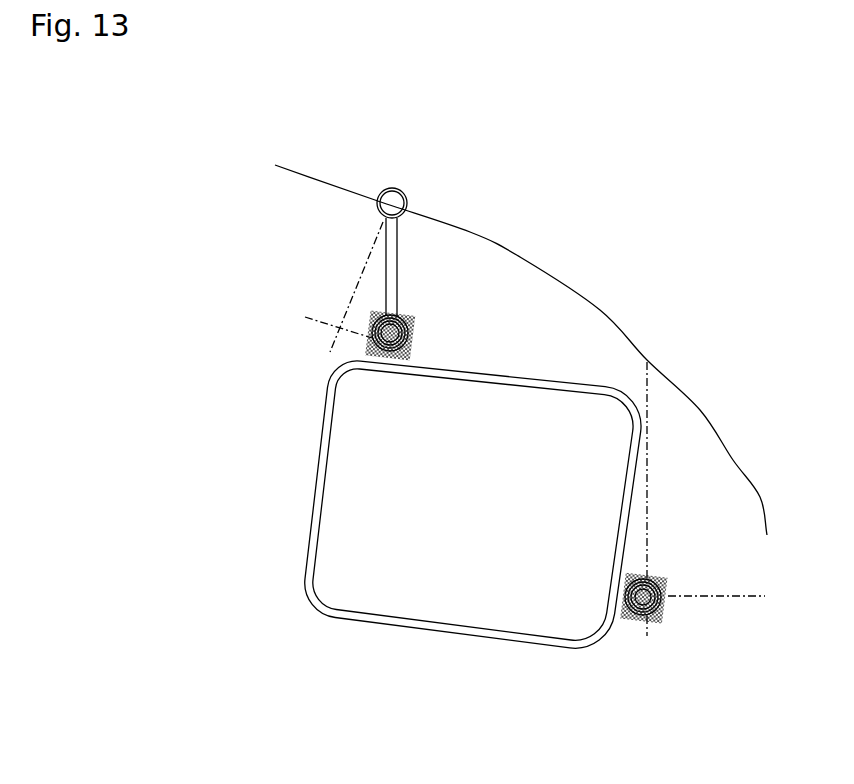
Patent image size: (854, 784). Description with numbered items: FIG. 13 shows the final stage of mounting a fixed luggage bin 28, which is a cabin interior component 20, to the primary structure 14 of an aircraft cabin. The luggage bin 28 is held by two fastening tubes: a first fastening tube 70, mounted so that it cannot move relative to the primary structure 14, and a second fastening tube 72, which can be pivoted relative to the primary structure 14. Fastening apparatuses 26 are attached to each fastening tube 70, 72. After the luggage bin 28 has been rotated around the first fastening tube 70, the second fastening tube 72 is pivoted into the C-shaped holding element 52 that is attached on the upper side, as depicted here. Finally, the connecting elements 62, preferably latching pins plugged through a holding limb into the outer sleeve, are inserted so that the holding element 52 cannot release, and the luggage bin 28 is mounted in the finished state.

The primary structure 14 is at (508, 257).
The cabin interior component 20 is at (487, 372).
The luggage bin 28 is at (473, 481).
The fastening apparatus 26 is at (376, 336).
The holding element 52 is at (417, 320).
The connecting element 62 is at (648, 622).
The first fastening tube 70 is at (658, 607).
The second fastening tube 72 is at (355, 323).